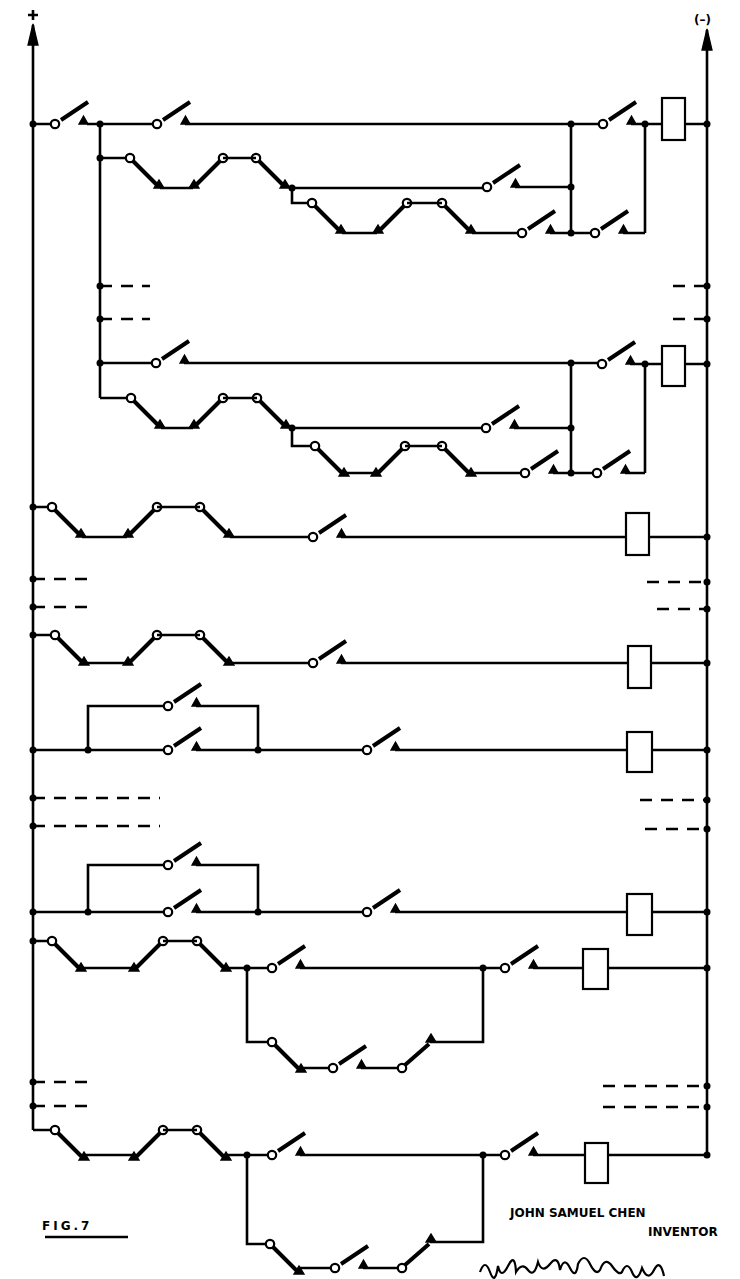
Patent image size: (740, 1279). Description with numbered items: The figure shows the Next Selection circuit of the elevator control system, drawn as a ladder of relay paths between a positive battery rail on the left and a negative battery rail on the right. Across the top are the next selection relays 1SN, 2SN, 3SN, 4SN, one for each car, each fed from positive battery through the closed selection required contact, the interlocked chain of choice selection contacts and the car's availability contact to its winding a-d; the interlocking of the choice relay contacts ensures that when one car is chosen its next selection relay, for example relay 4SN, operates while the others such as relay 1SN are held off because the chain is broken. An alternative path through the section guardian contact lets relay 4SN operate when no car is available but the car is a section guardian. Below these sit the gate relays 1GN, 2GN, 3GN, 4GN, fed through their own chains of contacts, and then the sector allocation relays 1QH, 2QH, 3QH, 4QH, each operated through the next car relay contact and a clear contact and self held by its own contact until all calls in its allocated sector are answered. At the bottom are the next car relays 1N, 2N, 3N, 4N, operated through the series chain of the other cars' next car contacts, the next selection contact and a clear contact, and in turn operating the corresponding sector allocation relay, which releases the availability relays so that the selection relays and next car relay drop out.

The next selection relay 1SN is at (672, 110).
The selection relay 2SN is at (664, 279).
The selection relay 3SN is at (668, 309).
The next selection relay 4SN is at (672, 356).
The gate relay 1GN is at (635, 524).
The gate relay 2GN is at (617, 583).
The gate relay 3GN is at (624, 610).
The gate relay 4GN is at (637, 657).
The queue hold relay 1QH is at (637, 741).
The queue hold relay 2QH is at (611, 801).
The queue hold relay 3QH is at (618, 830).
The sector allocation relay 4QH is at (637, 905).
The N relay 1N is at (593, 959).
The N relay 2N is at (612, 1076).
The N relay 3N is at (612, 1098).
The next car relay 4N is at (594, 1153).